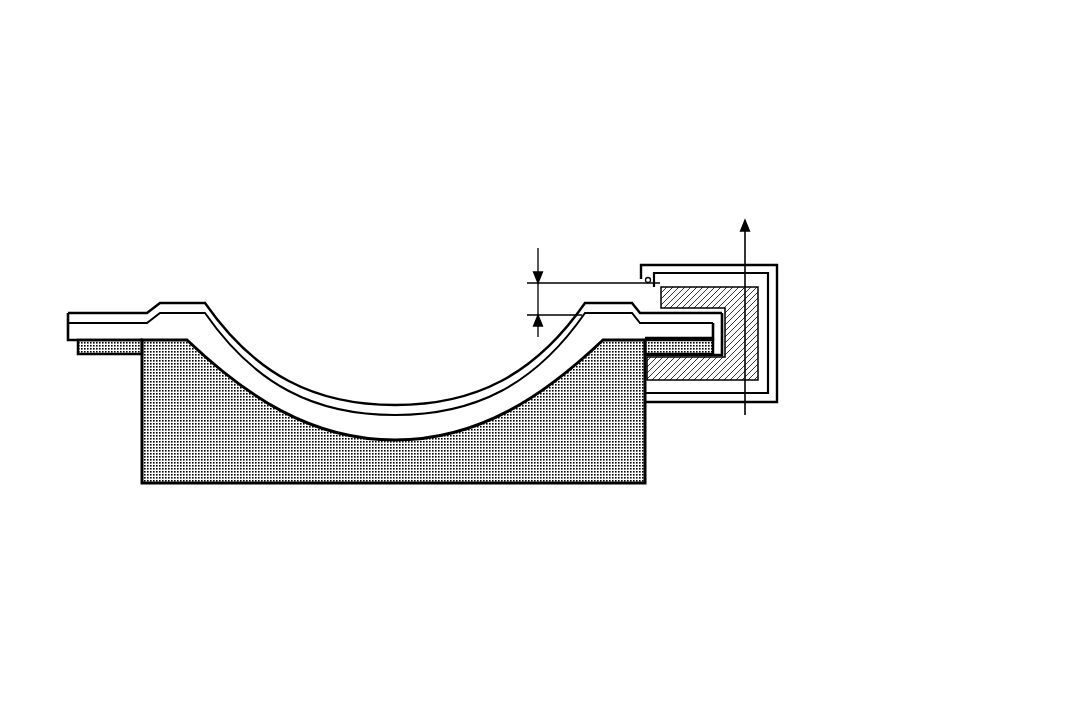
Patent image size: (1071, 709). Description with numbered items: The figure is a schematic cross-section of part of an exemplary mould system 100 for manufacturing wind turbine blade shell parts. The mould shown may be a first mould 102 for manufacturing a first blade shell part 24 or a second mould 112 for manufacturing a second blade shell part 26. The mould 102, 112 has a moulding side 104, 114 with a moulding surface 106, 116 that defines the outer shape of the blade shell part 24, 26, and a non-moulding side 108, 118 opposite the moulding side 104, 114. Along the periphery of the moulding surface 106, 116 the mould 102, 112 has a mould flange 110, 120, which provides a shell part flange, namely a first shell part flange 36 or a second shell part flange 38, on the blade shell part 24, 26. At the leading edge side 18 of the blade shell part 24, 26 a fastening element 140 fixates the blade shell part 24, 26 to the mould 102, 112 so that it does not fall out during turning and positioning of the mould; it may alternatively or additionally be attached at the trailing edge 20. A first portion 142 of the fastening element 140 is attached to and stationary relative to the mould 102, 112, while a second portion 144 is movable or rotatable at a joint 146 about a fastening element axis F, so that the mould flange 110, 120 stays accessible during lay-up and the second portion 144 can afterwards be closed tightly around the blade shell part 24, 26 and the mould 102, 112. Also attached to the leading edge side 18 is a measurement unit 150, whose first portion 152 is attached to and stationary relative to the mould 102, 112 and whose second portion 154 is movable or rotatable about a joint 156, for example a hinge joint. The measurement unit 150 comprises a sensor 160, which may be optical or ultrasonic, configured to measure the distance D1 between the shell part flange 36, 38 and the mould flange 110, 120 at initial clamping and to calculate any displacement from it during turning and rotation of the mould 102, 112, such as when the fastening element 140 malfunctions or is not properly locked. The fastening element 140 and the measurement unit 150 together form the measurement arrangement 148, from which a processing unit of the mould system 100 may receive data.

The mould system 100 is at (731, 124).
The leading edge side 18 is at (586, 190).
The trailing edge 20 is at (208, 258).
The first mould 102 is at (395, 277).
The second mould 112 is at (251, 220).
The first blade shell part 24 is at (395, 359).
The second blade shell part 26 is at (308, 390).
The first shell part flange 36 is at (395, 274).
The second shell part flange 38 is at (95, 312).
The moulding side 104 is at (395, 318).
The moulding side 114 is at (426, 286).
The moulding surface 106 is at (393, 438).
The moulding surface 116 is at (327, 438).
The non-moulding side 108 is at (393, 412).
The non-moulding side 118 is at (571, 534).
The mould flange 110 is at (393, 410).
The mould flange 120 is at (122, 328).
The measurement arrangement 148 is at (815, 196).
The fastening element 140 is at (752, 322).
The first portion of the fastening element 142 is at (740, 303).
The second portion of the fastening element 144 is at (740, 303).
The joint 146 is at (723, 300).
The measurement unit 150 is at (770, 290).
The first portion of the measurement unit 152 is at (725, 398).
The second portion of the measurement unit 154 is at (710, 267).
The joint 156 is at (780, 331).
The sensor 160 is at (646, 277).
The distance D1 is at (573, 292).
The fastening element axis F is at (750, 247).